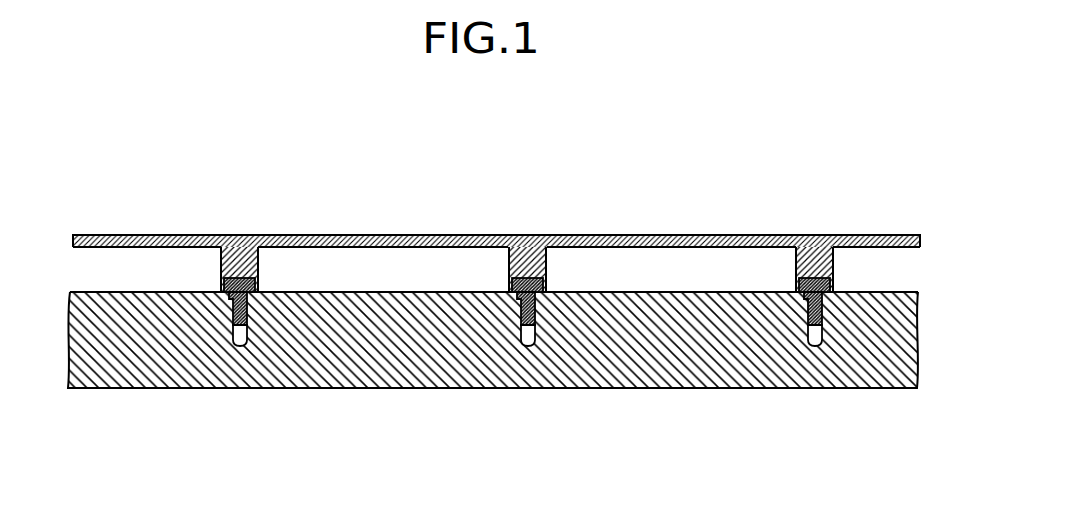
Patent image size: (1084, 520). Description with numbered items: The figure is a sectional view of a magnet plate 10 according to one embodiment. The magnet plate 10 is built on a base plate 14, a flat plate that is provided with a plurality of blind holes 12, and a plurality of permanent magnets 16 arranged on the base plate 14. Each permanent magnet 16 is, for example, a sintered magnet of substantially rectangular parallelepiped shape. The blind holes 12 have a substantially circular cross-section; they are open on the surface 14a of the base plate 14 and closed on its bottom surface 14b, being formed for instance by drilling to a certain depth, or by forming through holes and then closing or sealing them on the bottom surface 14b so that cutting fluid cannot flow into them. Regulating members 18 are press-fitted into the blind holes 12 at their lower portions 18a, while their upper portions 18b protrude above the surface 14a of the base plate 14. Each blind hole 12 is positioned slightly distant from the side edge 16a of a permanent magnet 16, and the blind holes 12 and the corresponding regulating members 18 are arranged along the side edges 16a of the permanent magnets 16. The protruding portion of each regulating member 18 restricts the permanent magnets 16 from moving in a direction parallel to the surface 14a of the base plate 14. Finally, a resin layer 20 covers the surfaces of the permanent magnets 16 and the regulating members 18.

The magnet plate 10 is at (494, 300).
The blind hole 12 is at (248, 333).
The base plate 14 is at (493, 390).
The surface of the base plate 14a is at (626, 292).
The bottom surface of the base plate 14b is at (133, 388).
The permanent magnet 16 is at (496, 215).
The side edge of the permanent magnet 16a is at (260, 235).
The regulating member 18 is at (525, 291).
The lower portion of the regulating member 18a is at (226, 313).
The upper portion of the regulating member 18b is at (227, 235).
The resin layer 20 is at (330, 235).